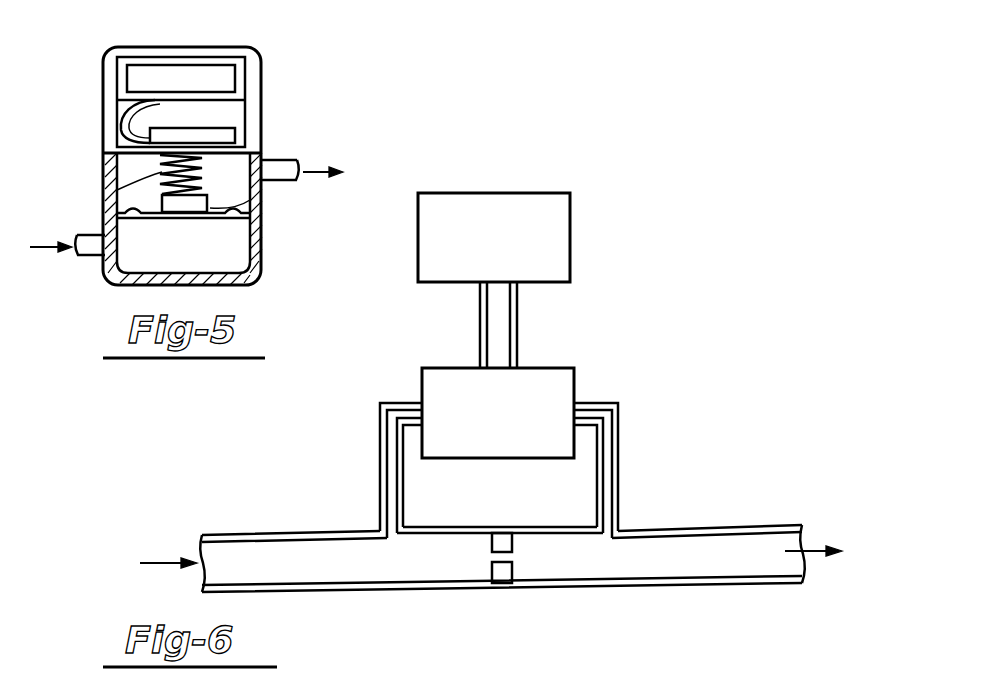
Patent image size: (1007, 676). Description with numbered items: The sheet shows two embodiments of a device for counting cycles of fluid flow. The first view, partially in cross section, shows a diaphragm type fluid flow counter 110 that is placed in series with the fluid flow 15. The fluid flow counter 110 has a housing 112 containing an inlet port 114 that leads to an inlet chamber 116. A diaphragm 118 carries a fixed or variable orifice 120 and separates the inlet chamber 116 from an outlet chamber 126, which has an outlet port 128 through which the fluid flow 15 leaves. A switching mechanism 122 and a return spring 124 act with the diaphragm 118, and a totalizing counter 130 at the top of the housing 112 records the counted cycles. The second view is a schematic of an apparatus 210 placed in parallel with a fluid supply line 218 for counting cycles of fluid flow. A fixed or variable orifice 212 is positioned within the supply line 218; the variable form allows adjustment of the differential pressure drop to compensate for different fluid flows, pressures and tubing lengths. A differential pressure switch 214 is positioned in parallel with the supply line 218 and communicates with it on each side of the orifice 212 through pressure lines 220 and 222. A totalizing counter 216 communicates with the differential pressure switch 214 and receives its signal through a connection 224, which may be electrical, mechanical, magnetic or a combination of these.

In FIG. 5, the fluid flow counter 110 is at (286, 58).
In FIG. 5, the housing 112 is at (260, 250).
In FIG. 5, the inlet port 114 is at (110, 247).
In FIG. 5, the fluid flow 15 is at (100, 238).
In FIG. 5, the inlet chamber 116 is at (200, 260).
In FIG. 5, the diaphragm 118 is at (217, 217).
In FIG. 5, the orifice 120 is at (133, 212).
In FIG. 5, the switching mechanism 122 is at (193, 205).
In FIG. 5, the return spring 124 is at (110, 207).
In FIG. 5, the outlet chamber 126 is at (130, 182).
In FIG. 5, the outlet port 128 is at (262, 163).
In FIG. 5, the totalizing counter 130 is at (208, 78).
In FIG. 6, the apparatus 210 is at (616, 270).
In FIG. 6, the orifice 212 is at (503, 572).
In FIG. 6, the differential pressure switch 214 is at (510, 428).
In FIG. 6, the totalizing counter 216 is at (510, 250).
In FIG. 6, the fluid supply line 218 is at (304, 572).
In FIG. 6, the pressure line 220 is at (390, 470).
In FIG. 6, the pressure line 222 is at (607, 453).
In FIG. 6, the connection 224 is at (497, 322).